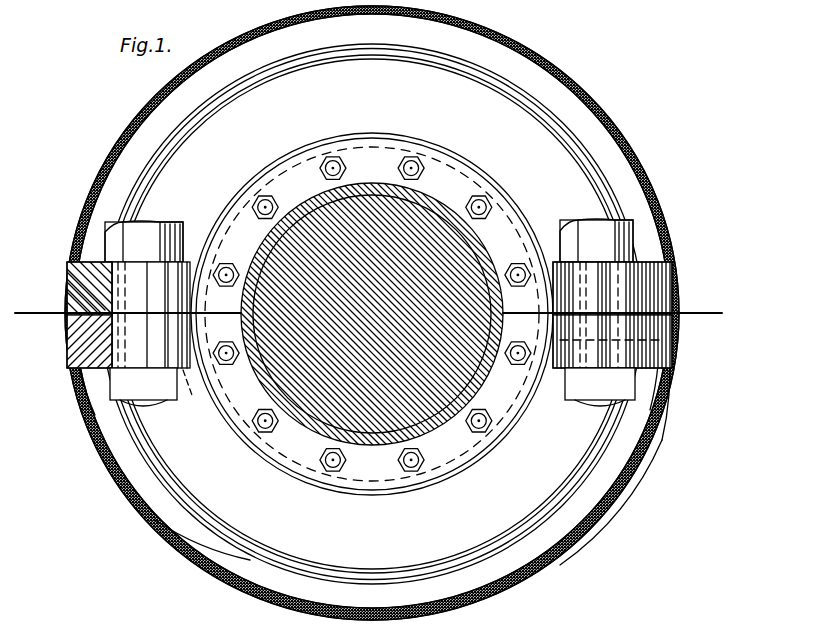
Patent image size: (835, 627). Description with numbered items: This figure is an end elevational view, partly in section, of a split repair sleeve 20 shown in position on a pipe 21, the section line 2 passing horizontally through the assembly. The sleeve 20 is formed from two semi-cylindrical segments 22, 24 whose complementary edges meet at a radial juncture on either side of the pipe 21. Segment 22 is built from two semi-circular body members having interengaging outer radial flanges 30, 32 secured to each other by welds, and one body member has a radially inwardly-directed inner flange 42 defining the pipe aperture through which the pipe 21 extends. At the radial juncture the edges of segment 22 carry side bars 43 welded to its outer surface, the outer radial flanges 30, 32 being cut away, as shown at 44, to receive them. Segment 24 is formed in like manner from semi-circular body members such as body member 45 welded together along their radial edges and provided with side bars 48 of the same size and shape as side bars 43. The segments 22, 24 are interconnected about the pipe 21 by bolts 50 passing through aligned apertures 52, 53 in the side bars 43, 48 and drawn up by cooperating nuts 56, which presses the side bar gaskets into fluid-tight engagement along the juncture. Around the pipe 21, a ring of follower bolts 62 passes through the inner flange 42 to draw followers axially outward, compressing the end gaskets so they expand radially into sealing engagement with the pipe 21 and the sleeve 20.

The split repair sleeve 20 is at (610, 112).
The pipe 21 is at (306, 226).
The semi-cylindrical segment 22 is at (193, 524).
The semi-cylindrical segment 24 is at (605, 168).
The outer radial flange 30 is at (610, 472).
The outer radial flange 32 is at (648, 410).
The inner flange 42 is at (445, 478).
The side bar 43 is at (76, 344).
The cut-away portion 44 is at (660, 378).
The semi-circular body member 45 is at (146, 122).
The side bar 48 is at (72, 281).
The bolt 50 is at (152, 393).
The aperture 52 is at (196, 394).
The aperture 53 is at (180, 262).
The nut 56 is at (166, 224).
The follower bolt 62 is at (414, 168).
The section line 2- 2 is at (366, 315).